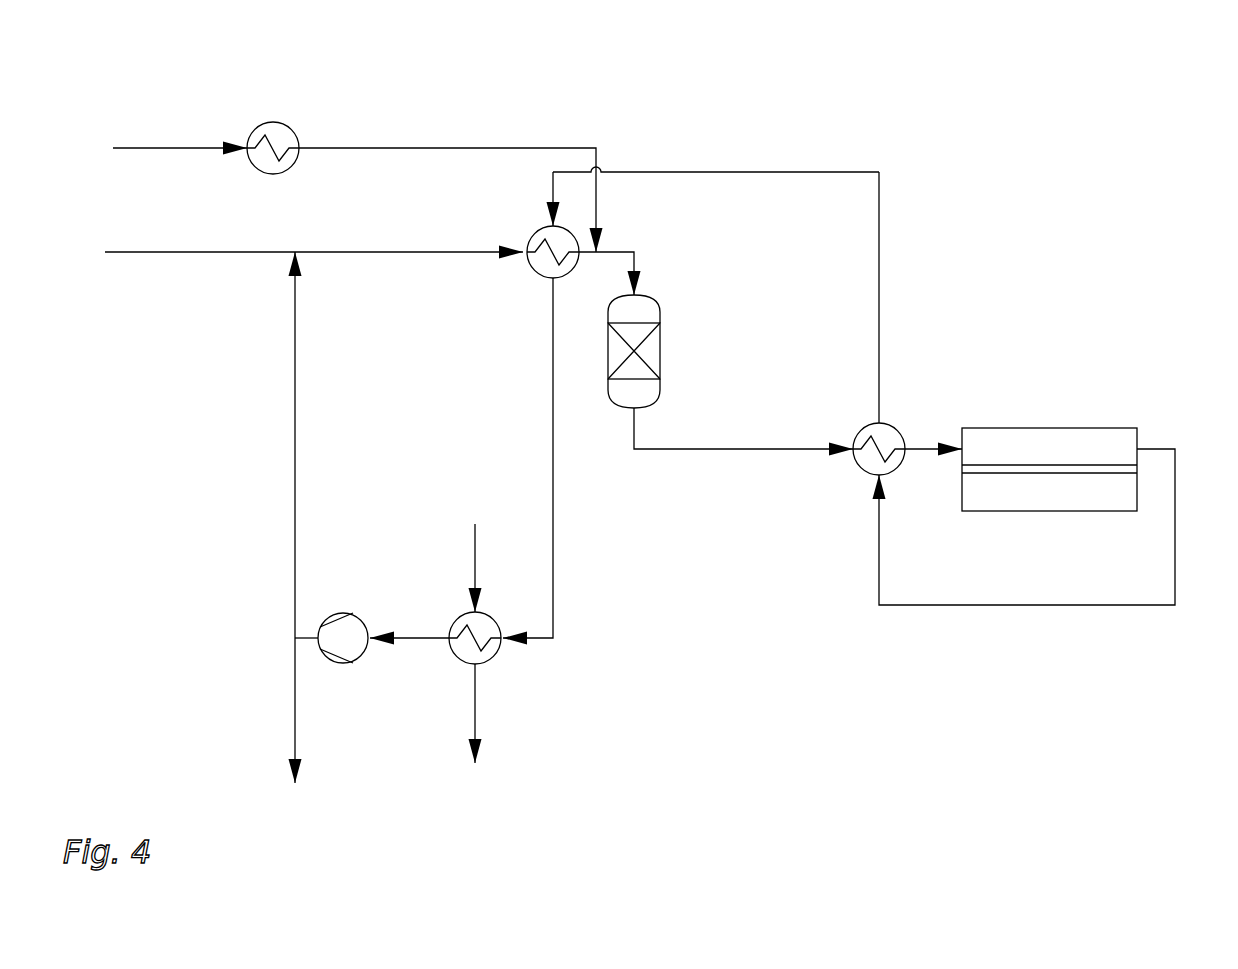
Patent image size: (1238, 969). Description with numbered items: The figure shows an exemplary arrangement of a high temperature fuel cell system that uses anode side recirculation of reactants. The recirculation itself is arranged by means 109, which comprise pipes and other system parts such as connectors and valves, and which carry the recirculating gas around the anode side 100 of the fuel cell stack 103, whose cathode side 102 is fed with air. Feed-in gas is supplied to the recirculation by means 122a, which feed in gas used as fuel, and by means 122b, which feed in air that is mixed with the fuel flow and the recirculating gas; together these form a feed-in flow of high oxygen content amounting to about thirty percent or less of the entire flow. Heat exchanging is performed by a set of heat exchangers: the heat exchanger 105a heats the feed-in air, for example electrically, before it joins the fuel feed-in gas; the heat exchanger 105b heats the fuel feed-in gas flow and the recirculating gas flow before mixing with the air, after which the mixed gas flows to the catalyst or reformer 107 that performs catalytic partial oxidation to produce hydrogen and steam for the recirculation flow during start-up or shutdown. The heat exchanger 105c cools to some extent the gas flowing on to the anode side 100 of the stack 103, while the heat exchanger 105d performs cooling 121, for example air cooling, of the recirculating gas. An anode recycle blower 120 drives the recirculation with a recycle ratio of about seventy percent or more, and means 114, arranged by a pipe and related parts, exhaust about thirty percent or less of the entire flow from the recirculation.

The means for feeding in air 122b is at (155, 148).
The heat exchanger 105a is at (294, 128).
The means for feeding in fuel gas 122a is at (180, 253).
The heat exchanger 105b is at (537, 277).
The means for performing catalytic partial oxidation 107 is at (663, 352).
The heat exchanger 105c is at (861, 470).
The fuel cell stack 103 is at (1068, 393).
The anode side 100 is at (1110, 428).
The cathode side 102 is at (1055, 511).
The means for performing anode side recirculation flow 109 is at (874, 662).
The heat exchanger 105d is at (493, 660).
The cooling 121 is at (507, 805).
The anode recycle blower 120 is at (345, 665).
The means for exhausting 114 is at (295, 725).